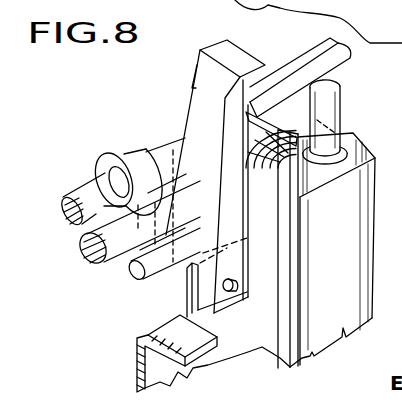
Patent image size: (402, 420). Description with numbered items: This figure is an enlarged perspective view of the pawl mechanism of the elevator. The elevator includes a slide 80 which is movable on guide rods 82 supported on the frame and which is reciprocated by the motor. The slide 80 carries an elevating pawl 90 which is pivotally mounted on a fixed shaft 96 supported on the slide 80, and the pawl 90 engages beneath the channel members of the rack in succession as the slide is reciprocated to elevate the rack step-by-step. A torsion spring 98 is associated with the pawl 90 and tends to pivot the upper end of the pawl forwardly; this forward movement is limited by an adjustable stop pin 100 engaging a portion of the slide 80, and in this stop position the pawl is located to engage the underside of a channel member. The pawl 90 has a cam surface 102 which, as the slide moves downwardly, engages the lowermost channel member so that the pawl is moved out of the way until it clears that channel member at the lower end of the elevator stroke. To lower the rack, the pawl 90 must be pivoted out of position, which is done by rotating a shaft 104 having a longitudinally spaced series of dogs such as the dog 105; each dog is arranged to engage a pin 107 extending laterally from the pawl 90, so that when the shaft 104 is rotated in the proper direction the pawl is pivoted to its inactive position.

The slide 80 is at (172, 372).
The guide rod 82 is at (335, 122).
The elevating pawl 90 is at (196, 70).
The fixed shaft 96 is at (90, 256).
The torsion spring 98 is at (262, 128).
The adjustable stop pin 100 is at (237, 290).
The cam surface 102 is at (193, 88).
The shaft 104 is at (65, 220).
The dog 105 is at (113, 153).
The pin 107 is at (166, 256).